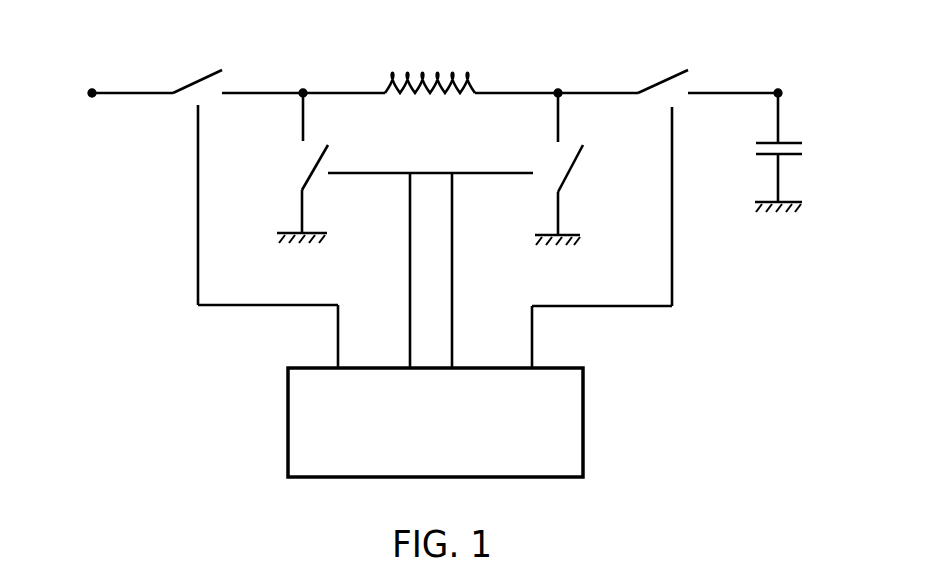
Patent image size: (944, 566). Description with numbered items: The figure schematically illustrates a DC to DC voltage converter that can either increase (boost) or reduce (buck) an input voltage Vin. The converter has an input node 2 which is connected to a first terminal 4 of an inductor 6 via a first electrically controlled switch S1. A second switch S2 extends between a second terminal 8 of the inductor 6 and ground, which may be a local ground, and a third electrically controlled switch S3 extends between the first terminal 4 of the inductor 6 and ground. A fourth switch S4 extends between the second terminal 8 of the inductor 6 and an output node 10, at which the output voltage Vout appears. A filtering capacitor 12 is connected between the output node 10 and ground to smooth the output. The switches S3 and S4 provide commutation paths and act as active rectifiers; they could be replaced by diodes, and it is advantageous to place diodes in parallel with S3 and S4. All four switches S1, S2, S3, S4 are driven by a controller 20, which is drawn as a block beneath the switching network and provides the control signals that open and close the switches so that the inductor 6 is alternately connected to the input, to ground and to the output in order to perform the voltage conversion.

The input node 2 is at (93, 97).
The first terminal 4 is at (302, 85).
The inductor 6 is at (421, 72).
The second terminal 8 is at (557, 86).
The output node 10 is at (776, 87).
The filtering capacitor 12 is at (804, 148).
The controller 20 is at (584, 423).
The first electrically controlled switch S1 is at (203, 76).
The second switch S2 is at (577, 163).
The third electrically controlled switch S3 is at (299, 166).
The fourth switch S4 is at (675, 76).